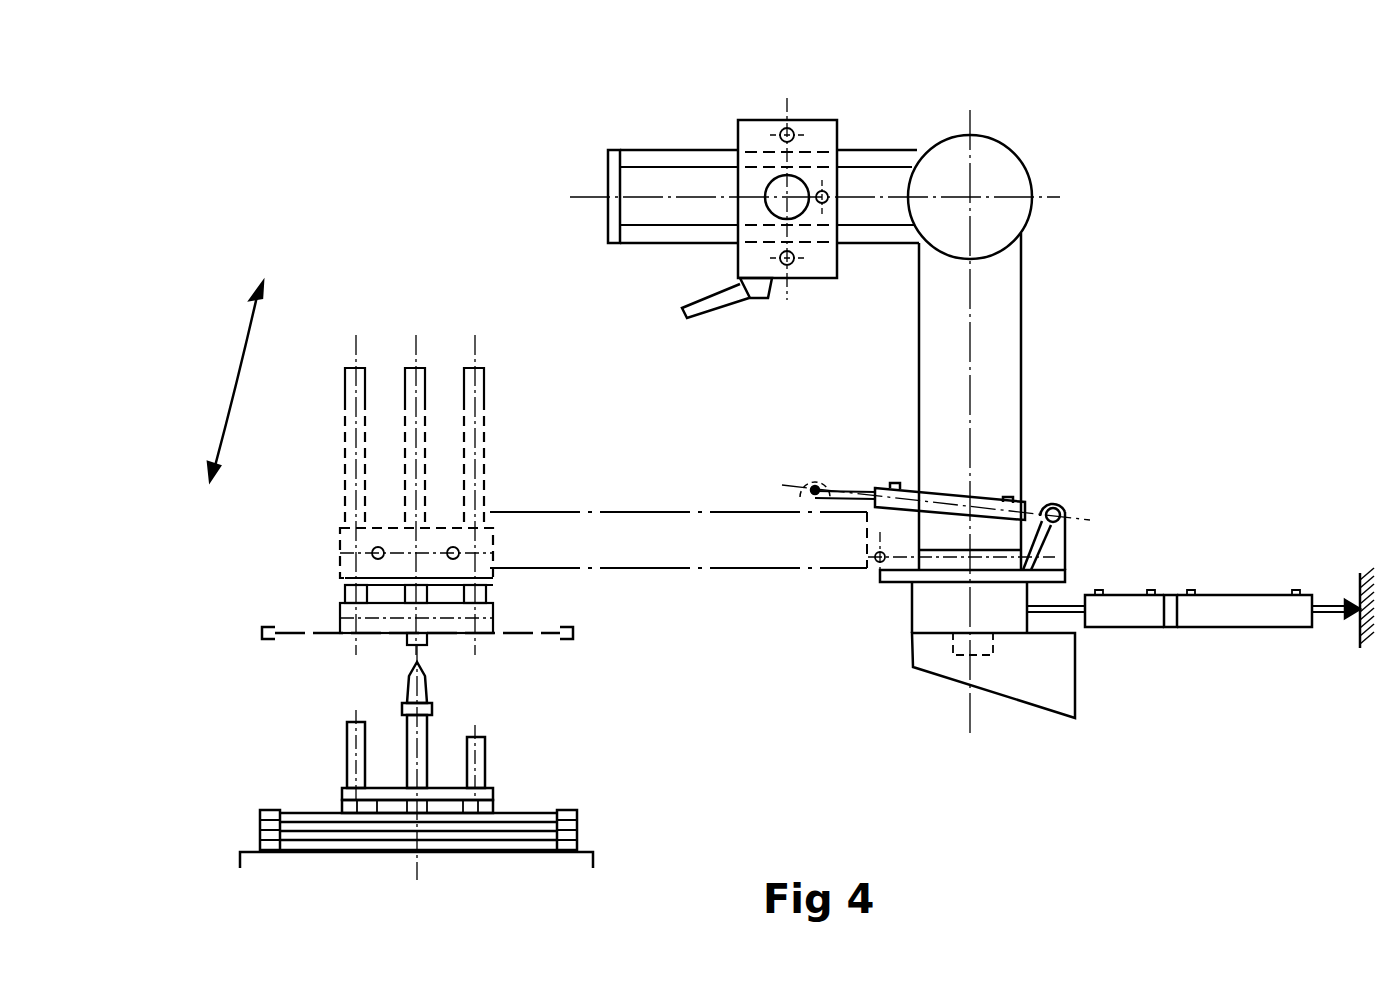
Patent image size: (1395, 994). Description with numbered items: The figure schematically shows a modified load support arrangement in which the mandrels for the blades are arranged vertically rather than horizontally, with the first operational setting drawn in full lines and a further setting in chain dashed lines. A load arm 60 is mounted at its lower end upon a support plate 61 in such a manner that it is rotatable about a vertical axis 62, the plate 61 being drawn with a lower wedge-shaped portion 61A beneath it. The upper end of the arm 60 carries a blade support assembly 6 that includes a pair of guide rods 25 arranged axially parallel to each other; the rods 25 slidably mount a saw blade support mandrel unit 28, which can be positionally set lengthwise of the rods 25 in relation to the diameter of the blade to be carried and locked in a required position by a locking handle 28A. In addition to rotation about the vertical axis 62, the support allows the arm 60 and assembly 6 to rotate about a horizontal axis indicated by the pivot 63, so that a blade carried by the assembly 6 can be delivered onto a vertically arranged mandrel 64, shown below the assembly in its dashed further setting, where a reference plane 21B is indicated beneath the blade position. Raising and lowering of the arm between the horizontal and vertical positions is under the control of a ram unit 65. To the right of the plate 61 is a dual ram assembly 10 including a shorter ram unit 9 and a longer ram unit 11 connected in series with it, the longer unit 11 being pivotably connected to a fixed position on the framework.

The blade support assembly 6 is at (858, 160).
The shorter ram unit 9 is at (1125, 605).
The dual ram assembly 10 is at (1170, 572).
The longer ram unit 11 is at (1275, 608).
The reference plane 21B is at (300, 630).
The guide rods 25 is at (670, 160).
The saw blade support mandrel unit 28 is at (757, 140).
The locking handle 28A is at (713, 307).
The load arm 60 is at (998, 398).
The support plate 61 is at (928, 613).
The wedge 61A is at (1038, 682).
The vertical axis 62 is at (970, 120).
The pivot 63 is at (875, 565).
The vertically arranged mandrel 64 is at (411, 728).
The ram unit 65 is at (900, 488).